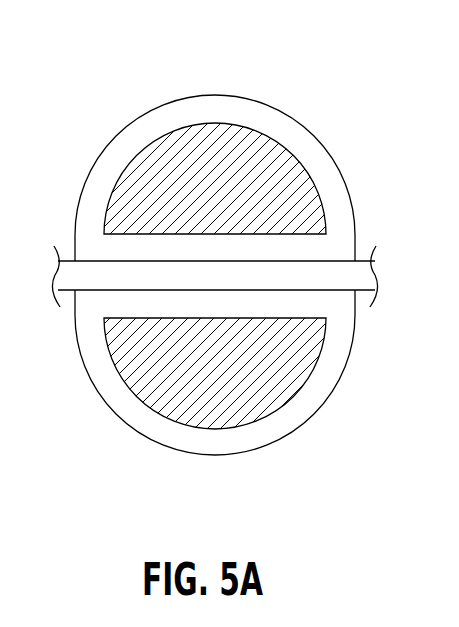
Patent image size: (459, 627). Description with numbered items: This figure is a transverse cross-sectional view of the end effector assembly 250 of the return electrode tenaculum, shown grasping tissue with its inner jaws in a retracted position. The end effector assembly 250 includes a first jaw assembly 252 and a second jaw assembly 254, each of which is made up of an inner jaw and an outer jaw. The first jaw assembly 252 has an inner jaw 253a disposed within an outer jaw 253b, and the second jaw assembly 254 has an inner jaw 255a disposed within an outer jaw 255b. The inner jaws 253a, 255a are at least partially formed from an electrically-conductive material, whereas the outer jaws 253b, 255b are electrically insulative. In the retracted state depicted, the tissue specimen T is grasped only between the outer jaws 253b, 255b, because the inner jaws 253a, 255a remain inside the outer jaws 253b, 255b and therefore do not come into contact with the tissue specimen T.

The end effector assembly 250 is at (262, 75).
The first jaw assembly 252 is at (338, 148).
The second jaw assembly 254 is at (320, 420).
The inner jaw 253a is at (152, 170).
The outer jaw 253b is at (105, 182).
The inner jaw 255a is at (182, 407).
The outer jaw 255b is at (115, 397).
The tissue specimen T is at (73, 282).